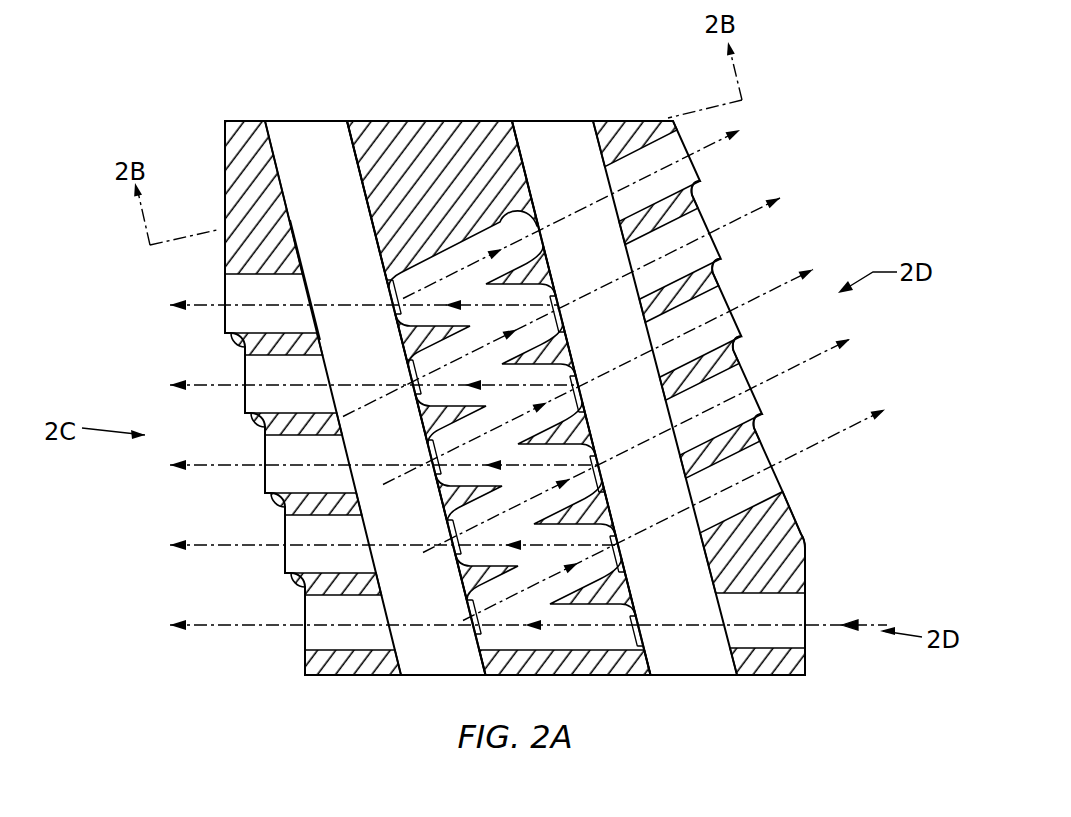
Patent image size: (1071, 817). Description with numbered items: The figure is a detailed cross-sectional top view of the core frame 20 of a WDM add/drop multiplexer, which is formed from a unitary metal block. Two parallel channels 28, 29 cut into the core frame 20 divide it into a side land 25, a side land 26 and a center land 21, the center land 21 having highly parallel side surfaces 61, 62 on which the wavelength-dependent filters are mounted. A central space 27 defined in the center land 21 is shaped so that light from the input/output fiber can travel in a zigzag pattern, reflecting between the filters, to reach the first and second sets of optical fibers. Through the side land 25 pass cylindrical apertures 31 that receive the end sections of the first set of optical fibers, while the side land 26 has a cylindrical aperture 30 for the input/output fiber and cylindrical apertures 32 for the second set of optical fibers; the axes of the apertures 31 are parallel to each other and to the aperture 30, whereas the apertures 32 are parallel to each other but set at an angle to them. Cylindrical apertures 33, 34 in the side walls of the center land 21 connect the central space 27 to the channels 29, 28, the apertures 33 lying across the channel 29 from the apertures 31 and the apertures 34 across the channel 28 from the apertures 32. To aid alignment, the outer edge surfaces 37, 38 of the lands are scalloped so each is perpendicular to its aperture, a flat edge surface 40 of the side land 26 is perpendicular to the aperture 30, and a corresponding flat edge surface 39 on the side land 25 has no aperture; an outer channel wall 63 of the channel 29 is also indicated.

The core frame 20 is at (185, 108).
The center land 21 is at (494, 374).
The side land 25 is at (237, 185).
The side land 26 is at (800, 548).
The central space 27 is at (532, 213).
The channel 28 is at (540, 128).
The channel 29 is at (310, 133).
The cylindrical aperture 30 is at (795, 607).
The cylindrical apertures 31 is at (238, 318).
The cylindrical apertures 32 is at (677, 148).
The cylindrical apertures 33 is at (405, 297).
The cylindrical apertures 34 is at (537, 242).
The edge surface 37 is at (241, 345).
The edge surface 38 is at (700, 197).
The flat edge surface 39 is at (225, 150).
The flat edge surface 40 is at (805, 663).
The side surface 61 is at (356, 172).
The side surface 62 is at (521, 150).
The outer channel wall 63 is at (302, 253).